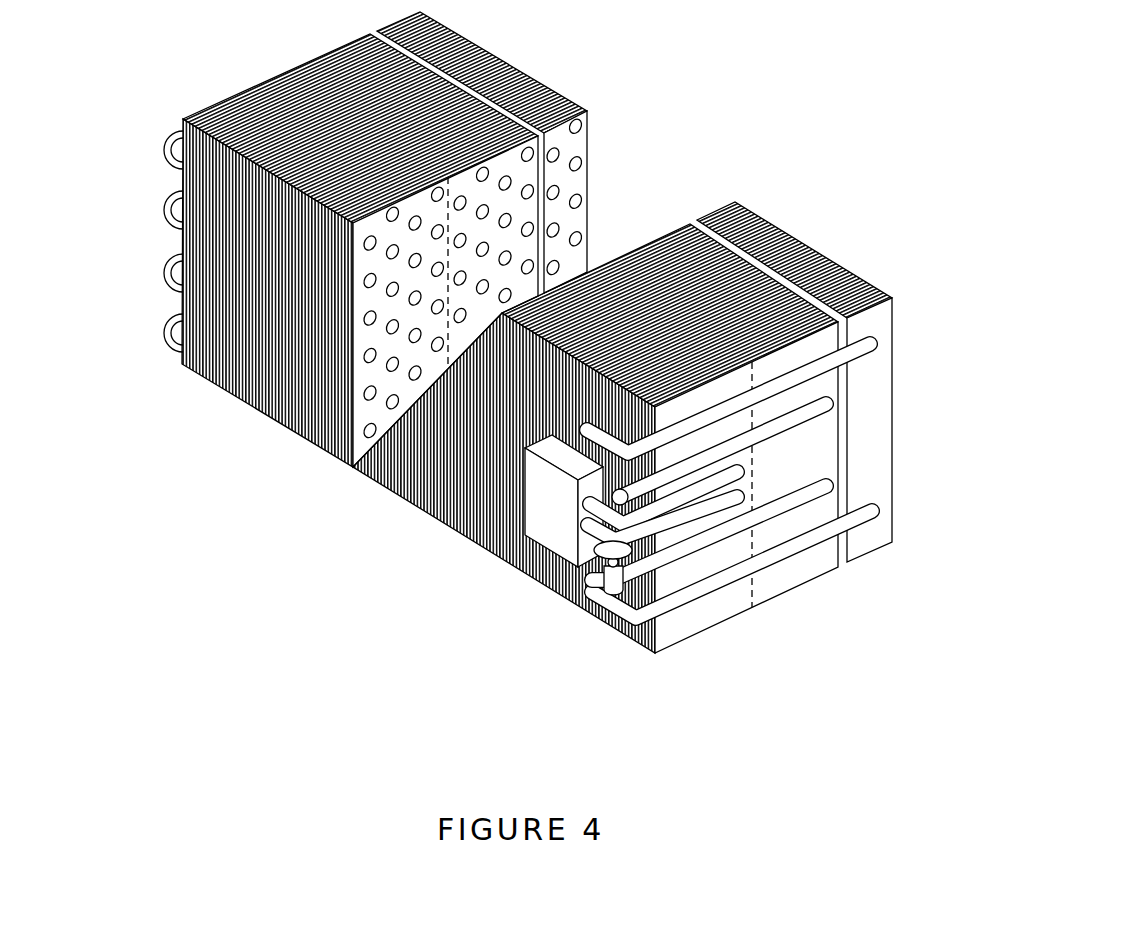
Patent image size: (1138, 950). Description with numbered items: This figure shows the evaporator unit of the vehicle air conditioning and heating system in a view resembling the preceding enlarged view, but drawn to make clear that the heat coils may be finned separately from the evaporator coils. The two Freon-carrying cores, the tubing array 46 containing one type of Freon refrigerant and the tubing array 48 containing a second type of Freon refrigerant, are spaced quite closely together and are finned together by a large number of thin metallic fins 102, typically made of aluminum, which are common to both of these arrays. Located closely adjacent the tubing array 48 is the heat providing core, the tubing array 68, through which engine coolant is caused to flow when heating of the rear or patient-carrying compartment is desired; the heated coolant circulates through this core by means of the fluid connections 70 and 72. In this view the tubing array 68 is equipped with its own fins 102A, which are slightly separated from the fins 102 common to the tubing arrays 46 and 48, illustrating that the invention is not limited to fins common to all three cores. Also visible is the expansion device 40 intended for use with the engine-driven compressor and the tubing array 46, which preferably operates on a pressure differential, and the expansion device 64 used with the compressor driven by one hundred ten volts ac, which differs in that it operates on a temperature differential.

The fins 102 is at (367, 340).
The fins 102A is at (572, 152).
The expansion device 40 is at (552, 517).
The tubing array 46 is at (717, 608).
The tubing array 48 is at (797, 565).
The expansion device 64 is at (613, 583).
The tubing array 68 is at (878, 427).
The fluid connection 70 is at (866, 350).
The fluid connection 72 is at (868, 515).